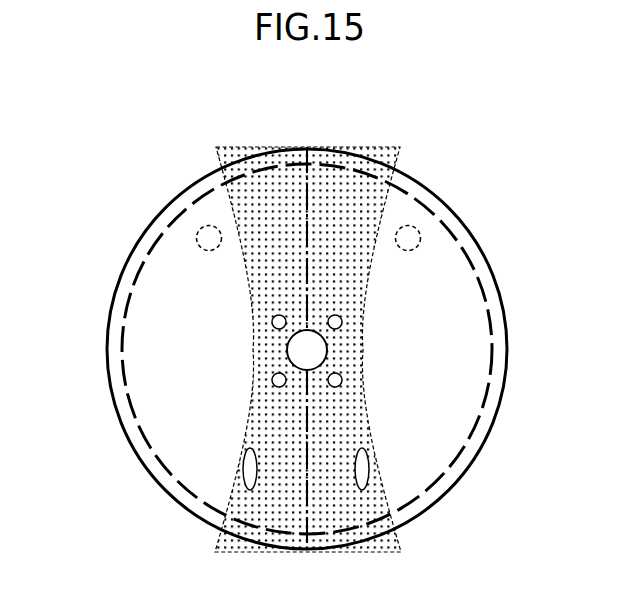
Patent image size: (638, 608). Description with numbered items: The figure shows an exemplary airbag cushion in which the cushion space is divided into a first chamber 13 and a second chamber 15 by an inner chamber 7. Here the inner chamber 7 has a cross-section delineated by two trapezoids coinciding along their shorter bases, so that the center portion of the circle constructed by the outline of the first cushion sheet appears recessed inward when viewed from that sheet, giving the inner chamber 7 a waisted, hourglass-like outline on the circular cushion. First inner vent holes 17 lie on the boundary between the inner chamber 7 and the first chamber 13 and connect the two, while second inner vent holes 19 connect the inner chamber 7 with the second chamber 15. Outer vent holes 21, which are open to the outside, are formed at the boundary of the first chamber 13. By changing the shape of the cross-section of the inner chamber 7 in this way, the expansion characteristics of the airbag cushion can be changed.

The inner chamber 7 is at (282, 236).
The first chamber 13 is at (174, 364).
The second chamber 15 is at (452, 364).
The first inner vent holes 17 is at (243, 468).
The second inner vent holes 19 is at (365, 468).
The outer vent holes 21 is at (196, 238).